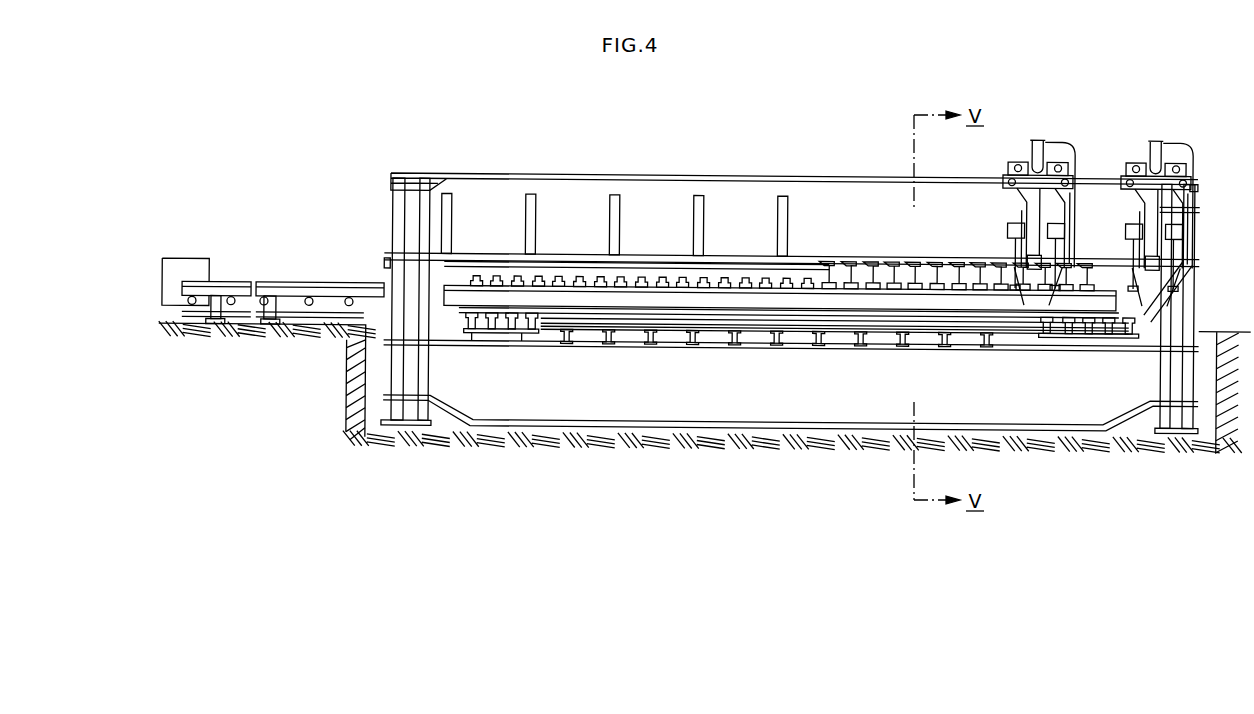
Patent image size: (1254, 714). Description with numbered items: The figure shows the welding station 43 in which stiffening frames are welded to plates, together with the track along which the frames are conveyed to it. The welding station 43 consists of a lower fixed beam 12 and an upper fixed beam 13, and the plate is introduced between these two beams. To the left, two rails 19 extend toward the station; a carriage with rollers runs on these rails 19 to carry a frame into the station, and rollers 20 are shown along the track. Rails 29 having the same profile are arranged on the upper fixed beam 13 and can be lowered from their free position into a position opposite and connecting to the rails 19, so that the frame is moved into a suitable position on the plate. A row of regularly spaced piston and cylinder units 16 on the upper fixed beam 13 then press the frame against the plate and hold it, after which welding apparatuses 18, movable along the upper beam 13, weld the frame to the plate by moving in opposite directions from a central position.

The lower fixed beam 12 is at (1082, 406).
The upper fixed beam 13 is at (860, 200).
The piston and cylinder units 16 is at (477, 274).
The welding apparatuses 18 is at (1040, 200).
The rails 19 is at (292, 285).
The rollers 20 is at (233, 299).
The rails 29 is at (647, 262).
The welding station 43 is at (744, 173).